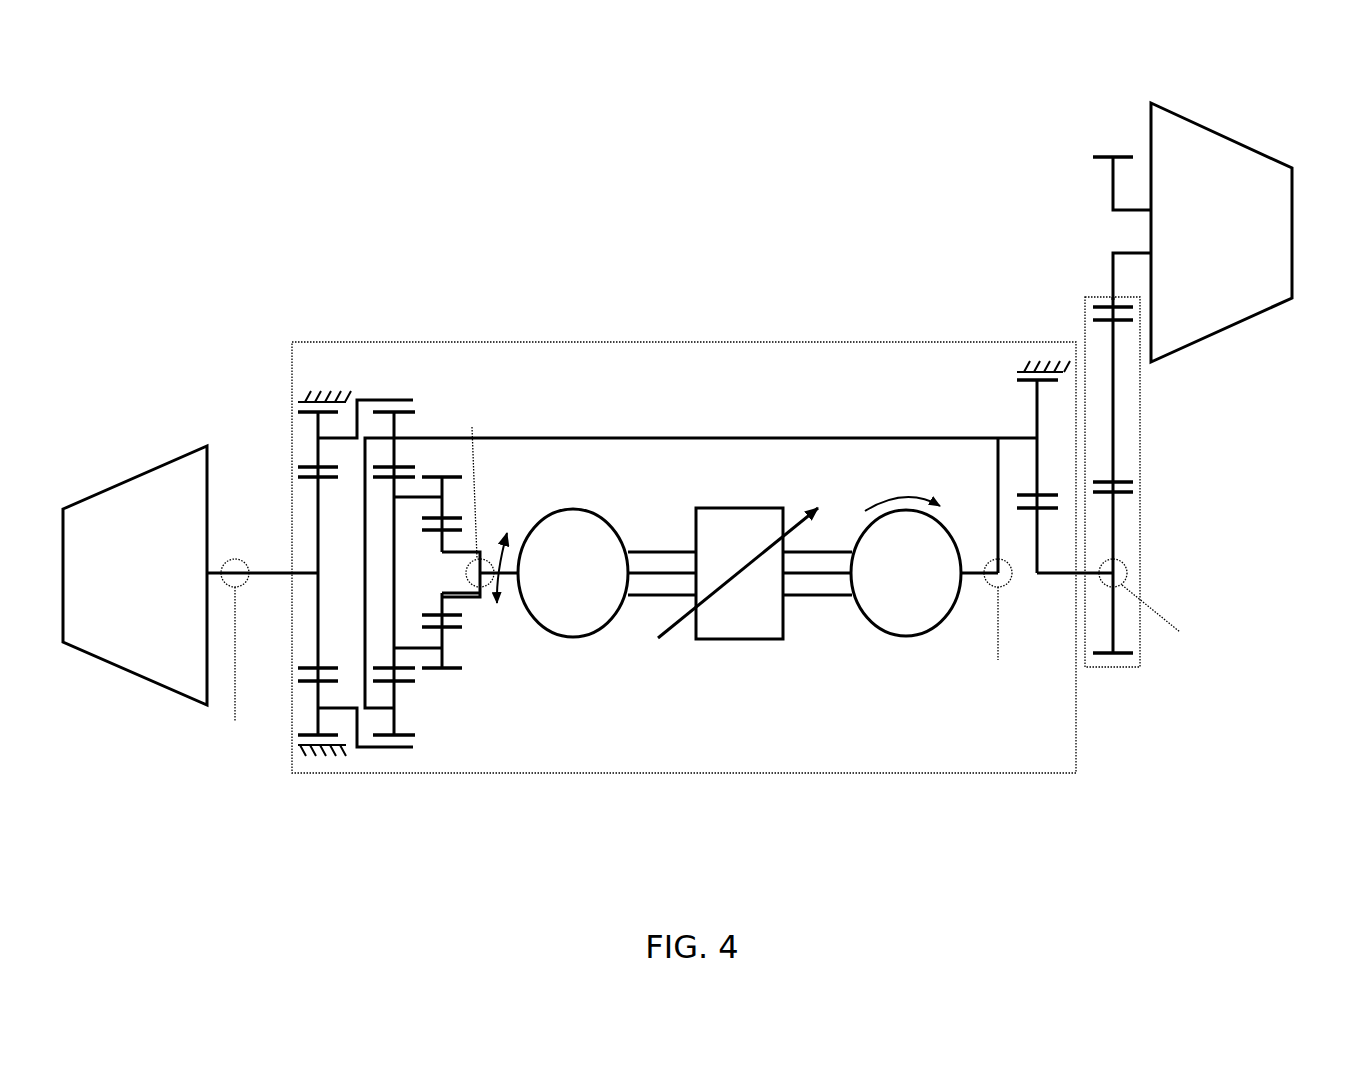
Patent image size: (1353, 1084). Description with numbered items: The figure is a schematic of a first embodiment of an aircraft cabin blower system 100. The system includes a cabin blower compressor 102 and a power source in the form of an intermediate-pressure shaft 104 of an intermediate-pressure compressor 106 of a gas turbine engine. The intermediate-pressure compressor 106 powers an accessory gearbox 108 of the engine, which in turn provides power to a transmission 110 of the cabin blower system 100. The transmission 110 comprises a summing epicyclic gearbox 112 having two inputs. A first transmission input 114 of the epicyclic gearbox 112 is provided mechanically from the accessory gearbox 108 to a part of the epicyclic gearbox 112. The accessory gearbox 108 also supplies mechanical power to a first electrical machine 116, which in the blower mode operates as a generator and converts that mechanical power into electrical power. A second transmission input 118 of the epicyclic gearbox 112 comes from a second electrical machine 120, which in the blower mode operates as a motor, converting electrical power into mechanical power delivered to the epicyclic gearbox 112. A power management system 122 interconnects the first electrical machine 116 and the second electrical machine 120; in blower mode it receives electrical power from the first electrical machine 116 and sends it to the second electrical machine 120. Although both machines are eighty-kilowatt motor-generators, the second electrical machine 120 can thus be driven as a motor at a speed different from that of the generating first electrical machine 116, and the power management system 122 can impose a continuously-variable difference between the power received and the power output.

The aircraft cabin blower system 100 is at (272, 168).
The cabin blower compressor 102 is at (148, 469).
The intermediate-pressure shaft 104 is at (1112, 268).
The intermediate-pressure compressor 106 is at (1202, 148).
The accessory gearbox 108 is at (1143, 470).
The transmission 110 is at (443, 313).
The summing epicyclic gearbox 112 is at (408, 750).
The first transmission input 114 is at (558, 437).
The first electrical machine 116 is at (902, 507).
The second transmission input 118 is at (500, 582).
The second electrical machine 120 is at (588, 508).
The power management system 122 is at (737, 640).